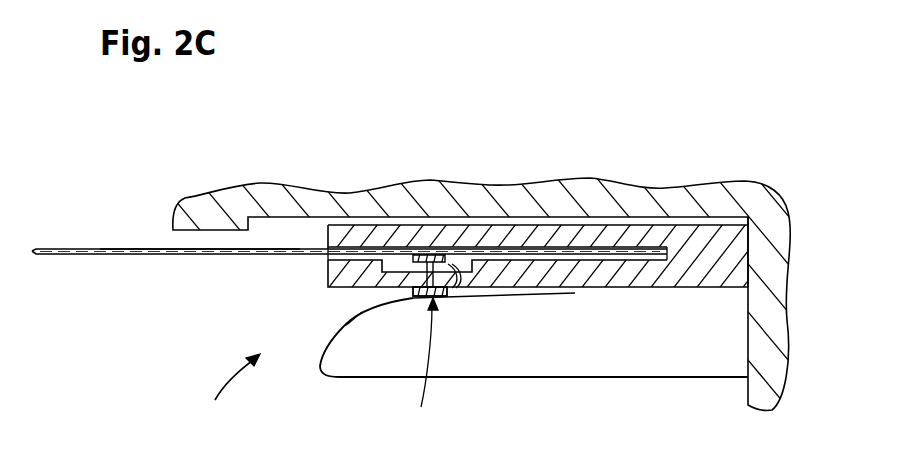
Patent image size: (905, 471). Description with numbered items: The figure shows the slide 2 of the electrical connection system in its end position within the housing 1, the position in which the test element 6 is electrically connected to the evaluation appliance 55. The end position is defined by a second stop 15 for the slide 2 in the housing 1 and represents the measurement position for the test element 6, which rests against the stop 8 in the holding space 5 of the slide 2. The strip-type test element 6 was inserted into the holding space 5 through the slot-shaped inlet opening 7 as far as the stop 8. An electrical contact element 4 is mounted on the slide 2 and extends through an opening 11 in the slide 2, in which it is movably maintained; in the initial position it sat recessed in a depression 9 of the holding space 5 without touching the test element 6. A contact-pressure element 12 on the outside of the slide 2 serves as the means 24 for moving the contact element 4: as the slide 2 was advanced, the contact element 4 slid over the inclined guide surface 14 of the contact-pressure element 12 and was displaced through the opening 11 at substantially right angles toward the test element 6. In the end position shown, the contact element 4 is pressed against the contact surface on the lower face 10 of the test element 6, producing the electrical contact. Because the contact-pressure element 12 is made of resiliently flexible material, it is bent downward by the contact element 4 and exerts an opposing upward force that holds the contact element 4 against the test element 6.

The housing 1 is at (452, 205).
The slide 2 is at (570, 235).
The electrical contact element 4 is at (420, 298).
The holding space 5 is at (521, 292).
The test element 6 is at (123, 256).
The inlet opening 7 is at (327, 257).
The stop 8 is at (670, 248).
The depression 9 is at (464, 266).
The lower face 10 is at (189, 256).
The opening 11 is at (437, 298).
The contact-pressure element 12 is at (522, 379).
The guide surface 14 is at (368, 321).
The second stop 15 is at (744, 256).
The means for moving the contact element 24 is at (427, 376).
The evaluation appliance 55 is at (226, 400).